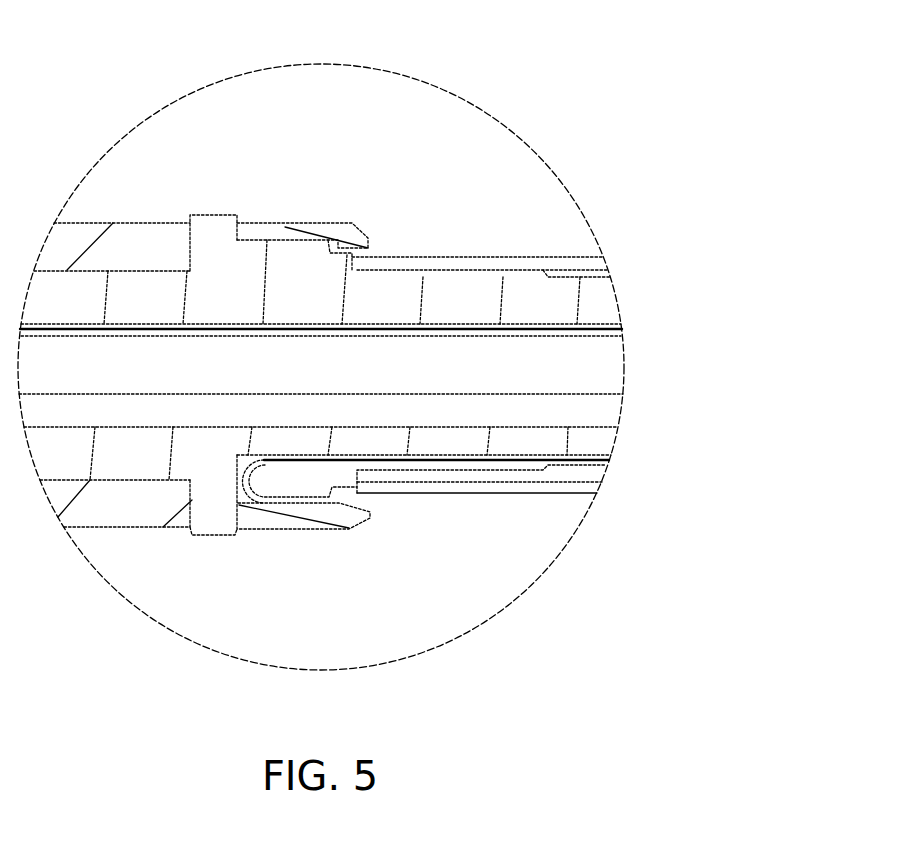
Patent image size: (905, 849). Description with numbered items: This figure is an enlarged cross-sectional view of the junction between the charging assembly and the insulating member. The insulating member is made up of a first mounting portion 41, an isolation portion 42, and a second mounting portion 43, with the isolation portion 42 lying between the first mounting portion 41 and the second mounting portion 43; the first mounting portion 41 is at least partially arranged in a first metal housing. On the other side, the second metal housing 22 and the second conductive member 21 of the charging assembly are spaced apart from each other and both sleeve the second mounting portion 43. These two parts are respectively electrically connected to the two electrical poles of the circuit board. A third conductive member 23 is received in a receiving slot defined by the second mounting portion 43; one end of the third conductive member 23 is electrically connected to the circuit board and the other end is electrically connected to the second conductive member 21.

The second conductive member 21 is at (265, 235).
The second metal housing 22 is at (448, 262).
The third conductive member 23 is at (250, 493).
The first mounting portion 41 is at (125, 280).
The isolation portion 42 is at (195, 527).
The second mounting portion 43 is at (312, 260).